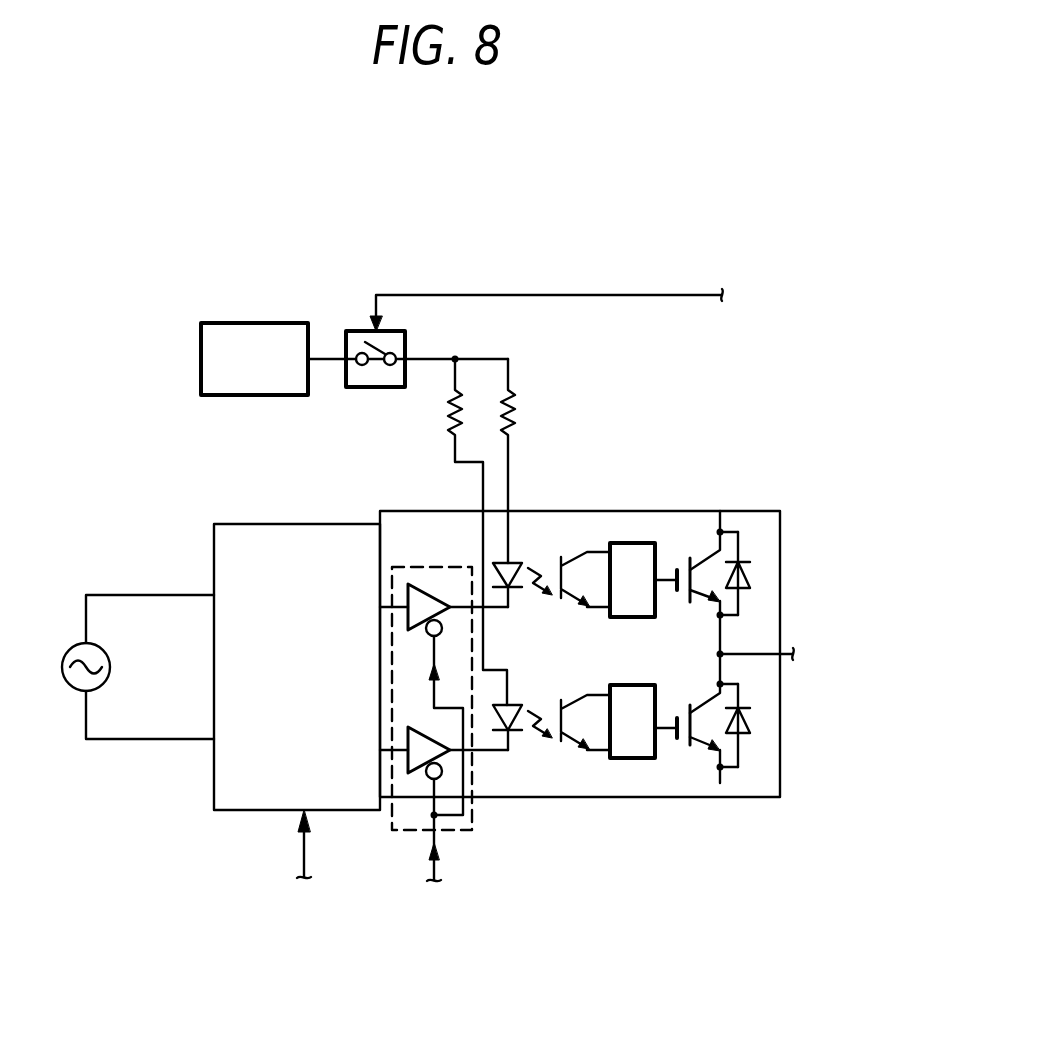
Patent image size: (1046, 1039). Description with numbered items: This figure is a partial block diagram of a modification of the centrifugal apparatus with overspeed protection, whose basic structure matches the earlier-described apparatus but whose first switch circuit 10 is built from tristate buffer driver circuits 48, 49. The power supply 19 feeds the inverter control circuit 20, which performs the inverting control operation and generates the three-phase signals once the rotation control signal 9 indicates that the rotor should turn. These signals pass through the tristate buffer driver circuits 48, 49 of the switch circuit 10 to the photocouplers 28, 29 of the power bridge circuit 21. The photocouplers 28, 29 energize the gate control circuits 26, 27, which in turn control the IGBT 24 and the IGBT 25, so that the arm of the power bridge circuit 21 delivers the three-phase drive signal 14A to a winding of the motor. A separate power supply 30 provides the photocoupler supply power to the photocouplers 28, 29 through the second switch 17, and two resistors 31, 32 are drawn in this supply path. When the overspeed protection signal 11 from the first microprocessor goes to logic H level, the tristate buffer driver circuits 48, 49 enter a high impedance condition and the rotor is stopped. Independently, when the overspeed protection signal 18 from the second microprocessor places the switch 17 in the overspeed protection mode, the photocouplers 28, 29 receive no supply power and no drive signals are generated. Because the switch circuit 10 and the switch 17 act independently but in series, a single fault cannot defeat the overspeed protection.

The rotation control signal 9 is at (304, 856).
The first switch circuit 10 is at (392, 672).
The first overspeed protection signal 11 is at (432, 838).
The three-phase drive signal 14A is at (762, 655).
The second switch circuit 17 is at (362, 329).
The second overspeed protection signal 18 is at (588, 295).
The power supply 19 is at (86, 643).
The inverter control circuit 20 is at (293, 524).
The power bridge circuit 21 is at (745, 511).
The IGBT 24 is at (712, 553).
The IGBT 25 is at (697, 745).
The gate control circuit 26 is at (640, 543).
The gate control circuit 27 is at (640, 758).
The photocoupler 28 is at (540, 566).
The photocoupler 29 is at (522, 742).
The power supply 30 is at (212, 322).
The resistor 31 is at (515, 410).
The resistor 32 is at (447, 413).
The tristate buffer driver circuit 48 is at (440, 598).
The tristate buffer driver circuit 49 is at (450, 758).